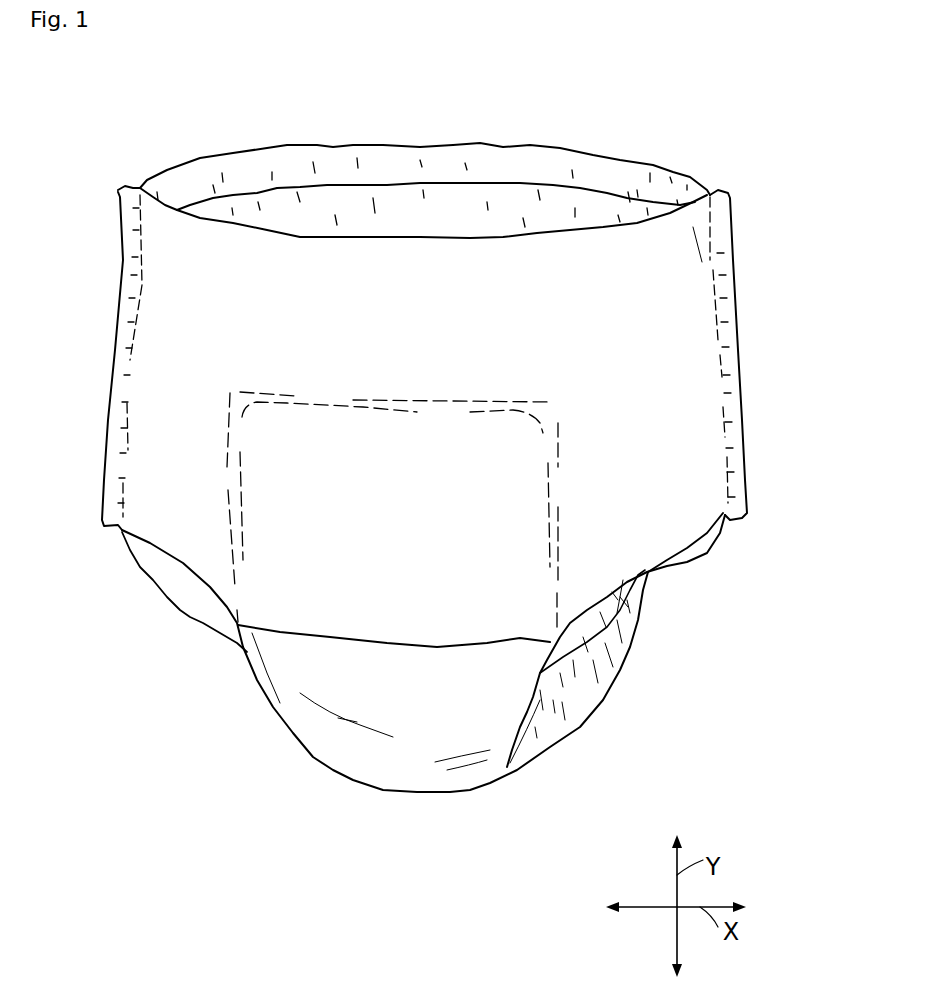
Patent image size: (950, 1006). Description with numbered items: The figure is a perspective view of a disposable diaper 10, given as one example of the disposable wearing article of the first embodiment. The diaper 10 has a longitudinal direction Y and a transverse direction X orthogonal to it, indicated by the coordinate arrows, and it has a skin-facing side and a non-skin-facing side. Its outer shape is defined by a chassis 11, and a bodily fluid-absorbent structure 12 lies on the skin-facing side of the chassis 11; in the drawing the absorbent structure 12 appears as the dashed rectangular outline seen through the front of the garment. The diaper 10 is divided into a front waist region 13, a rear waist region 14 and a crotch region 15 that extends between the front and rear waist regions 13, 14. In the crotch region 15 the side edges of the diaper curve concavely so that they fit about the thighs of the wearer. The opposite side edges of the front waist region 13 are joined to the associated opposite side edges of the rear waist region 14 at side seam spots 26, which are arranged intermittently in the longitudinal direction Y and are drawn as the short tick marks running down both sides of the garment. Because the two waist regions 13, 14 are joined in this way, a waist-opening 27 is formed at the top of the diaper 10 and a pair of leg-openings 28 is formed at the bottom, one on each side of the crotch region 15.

The diaper 10 is at (670, 117).
The chassis 11 is at (507, 200).
The bodily fluid-absorbent structure 12 is at (375, 765).
The front waist region 13 is at (677, 533).
The rear waist region 14 is at (590, 197).
The crotch region 15 is at (480, 777).
The side seam spots 26 is at (140, 255).
The waist-opening 27 is at (400, 207).
The leg-openings 28 is at (182, 582).